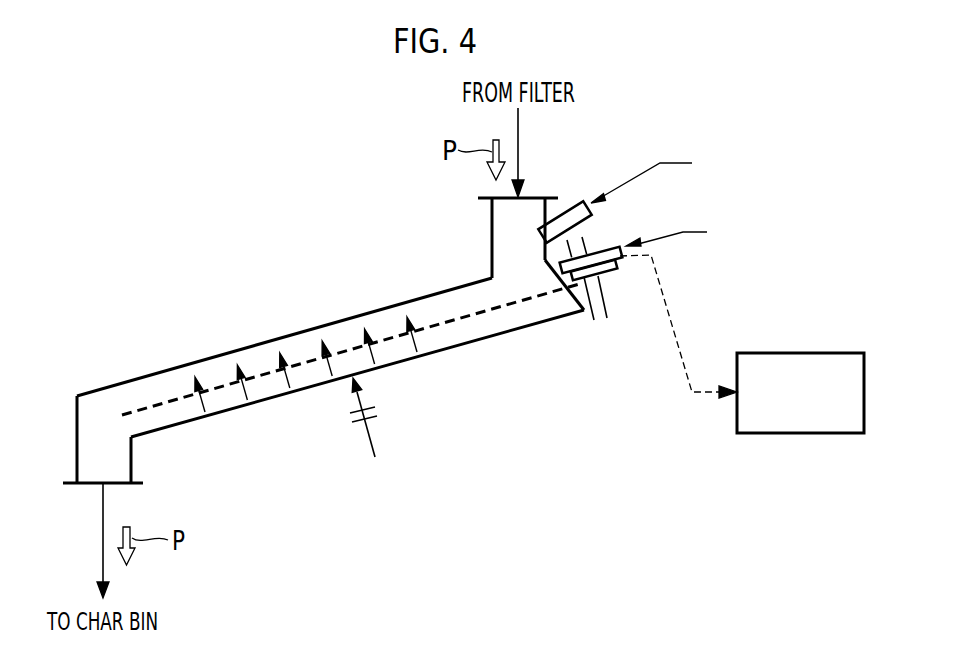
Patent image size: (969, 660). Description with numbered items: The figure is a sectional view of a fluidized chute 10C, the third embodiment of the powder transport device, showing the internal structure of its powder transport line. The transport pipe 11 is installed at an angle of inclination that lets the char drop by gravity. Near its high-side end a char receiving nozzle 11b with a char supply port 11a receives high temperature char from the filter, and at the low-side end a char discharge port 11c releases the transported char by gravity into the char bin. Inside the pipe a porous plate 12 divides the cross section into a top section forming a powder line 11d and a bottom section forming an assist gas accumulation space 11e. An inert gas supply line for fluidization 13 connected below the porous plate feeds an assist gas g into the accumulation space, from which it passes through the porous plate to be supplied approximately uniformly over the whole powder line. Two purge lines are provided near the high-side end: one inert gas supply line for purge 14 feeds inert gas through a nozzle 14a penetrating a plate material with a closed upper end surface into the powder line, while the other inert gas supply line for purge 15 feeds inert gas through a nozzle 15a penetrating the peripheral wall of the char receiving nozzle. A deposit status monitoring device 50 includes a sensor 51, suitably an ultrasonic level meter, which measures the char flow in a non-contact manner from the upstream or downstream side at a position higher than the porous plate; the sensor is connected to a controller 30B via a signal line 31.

The fluidized chute 10C is at (336, 200).
The transport pipe 11 is at (250, 330).
The char supply port 11a is at (537, 195).
The char receiving nozzle 11b is at (490, 222).
The char discharge port 11c is at (87, 488).
The powder line 11d is at (342, 332).
The assist gas accumulation space 11e is at (270, 398).
The porous plate 12 is at (493, 312).
The inert gas supply line for fluidization 13 is at (373, 440).
The inert gas supply line for purge 14 is at (683, 236).
The nozzle 14a is at (615, 246).
The inert gas supply line for purge 15 is at (640, 170).
The nozzle 15a is at (578, 202).
The controller 30B is at (798, 352).
The signal line 31 is at (678, 333).
The deposit status monitoring device 50 is at (623, 284).
The sensor 51 is at (603, 288).
The assist gas g is at (421, 347).